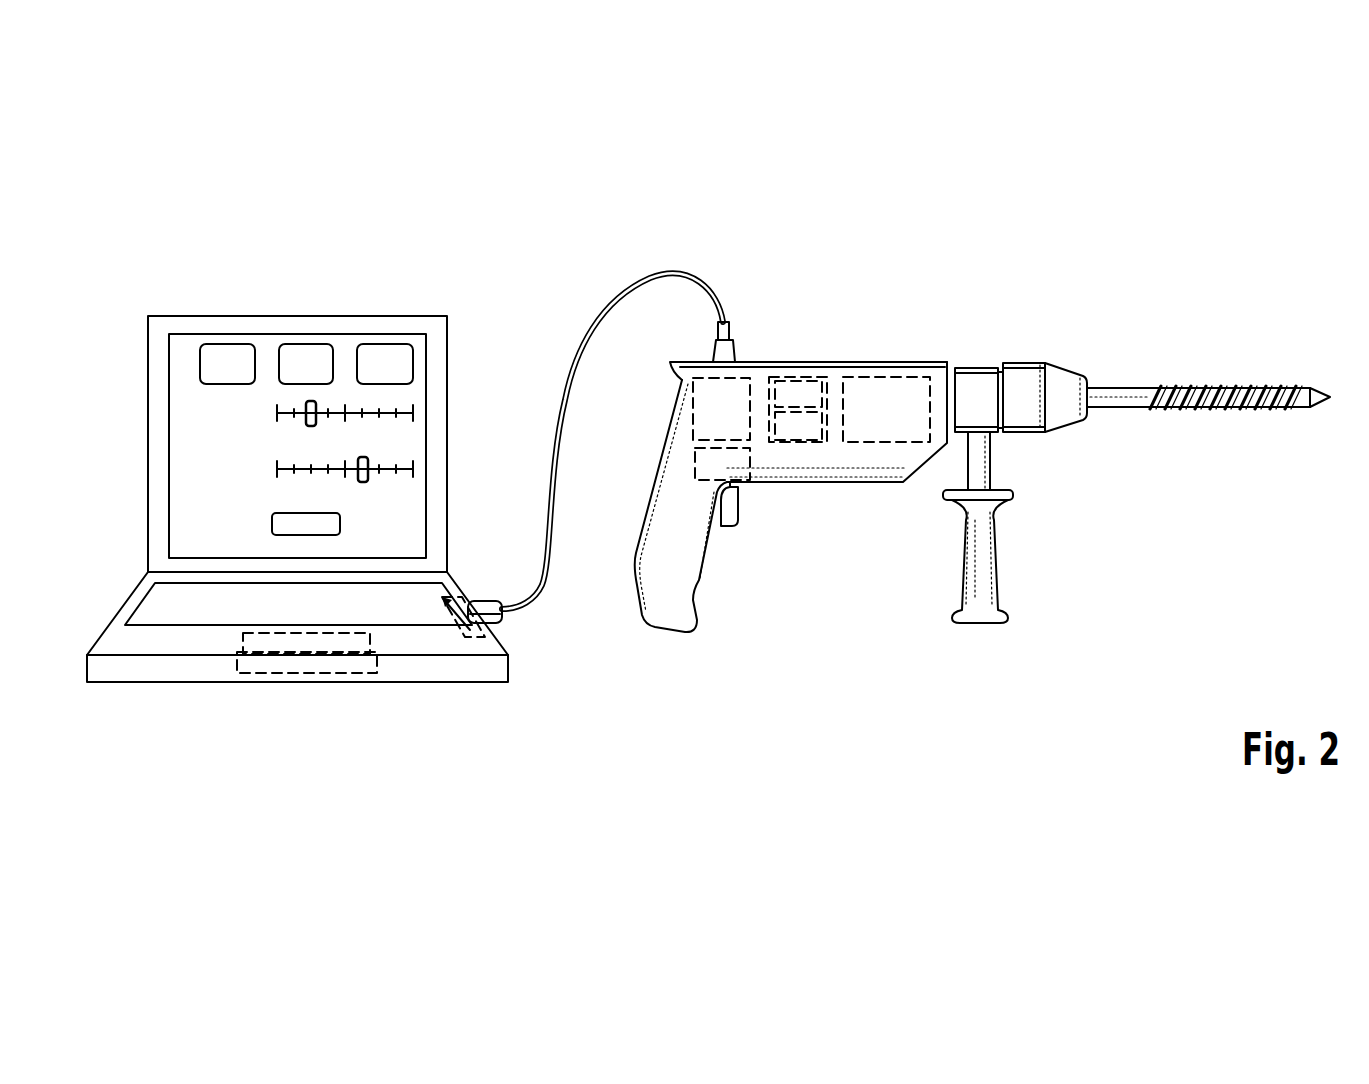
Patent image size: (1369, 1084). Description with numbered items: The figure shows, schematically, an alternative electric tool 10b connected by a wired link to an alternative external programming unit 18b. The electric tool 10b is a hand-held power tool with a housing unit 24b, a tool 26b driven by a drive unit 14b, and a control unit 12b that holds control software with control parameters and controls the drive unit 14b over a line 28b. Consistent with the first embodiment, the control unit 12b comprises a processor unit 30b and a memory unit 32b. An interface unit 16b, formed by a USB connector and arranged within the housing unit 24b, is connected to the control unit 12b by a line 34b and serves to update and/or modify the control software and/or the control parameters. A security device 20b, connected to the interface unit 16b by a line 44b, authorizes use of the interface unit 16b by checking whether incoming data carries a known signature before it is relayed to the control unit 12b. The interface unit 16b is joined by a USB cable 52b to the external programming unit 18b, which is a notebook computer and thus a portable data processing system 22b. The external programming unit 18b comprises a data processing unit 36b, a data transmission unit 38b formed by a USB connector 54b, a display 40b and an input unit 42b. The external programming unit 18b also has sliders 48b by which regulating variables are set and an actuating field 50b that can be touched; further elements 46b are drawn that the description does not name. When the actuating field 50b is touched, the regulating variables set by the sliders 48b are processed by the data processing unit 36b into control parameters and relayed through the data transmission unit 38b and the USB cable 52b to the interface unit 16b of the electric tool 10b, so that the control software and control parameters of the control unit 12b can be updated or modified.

The electric tool 10b is at (951, 438).
The control unit 12b is at (819, 460).
The drive unit 14b is at (900, 425).
The interface unit 16b is at (722, 396).
The external programming unit 18b is at (295, 512).
The security device 20b is at (720, 477).
The portable data processing system 22b is at (87, 705).
The housing unit 24b is at (944, 376).
The tool 26b is at (1205, 393).
The line 28b is at (830, 402).
The processor unit 30b is at (788, 433).
The memory unit 32b is at (803, 392).
The line 34b is at (809, 421).
The data processing unit 36b is at (323, 643).
The data transmission unit 38b is at (440, 633).
The display 40b is at (205, 318).
The input unit 42b is at (222, 603).
The line 44b is at (722, 447).
The display elements 46b is at (303, 318).
The sliders 48b is at (286, 384).
The actuating field 50b is at (272, 525).
The USB cable 52b is at (577, 352).
The USB connector 54b is at (472, 615).